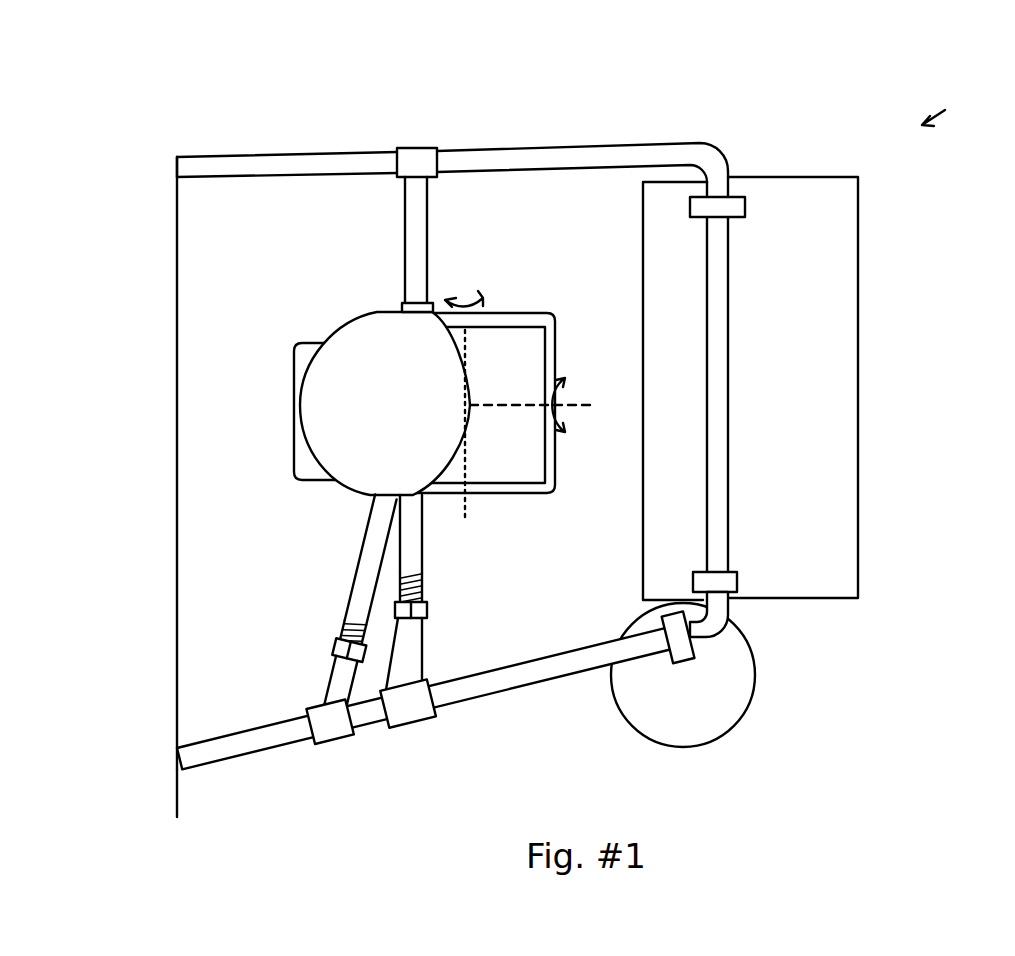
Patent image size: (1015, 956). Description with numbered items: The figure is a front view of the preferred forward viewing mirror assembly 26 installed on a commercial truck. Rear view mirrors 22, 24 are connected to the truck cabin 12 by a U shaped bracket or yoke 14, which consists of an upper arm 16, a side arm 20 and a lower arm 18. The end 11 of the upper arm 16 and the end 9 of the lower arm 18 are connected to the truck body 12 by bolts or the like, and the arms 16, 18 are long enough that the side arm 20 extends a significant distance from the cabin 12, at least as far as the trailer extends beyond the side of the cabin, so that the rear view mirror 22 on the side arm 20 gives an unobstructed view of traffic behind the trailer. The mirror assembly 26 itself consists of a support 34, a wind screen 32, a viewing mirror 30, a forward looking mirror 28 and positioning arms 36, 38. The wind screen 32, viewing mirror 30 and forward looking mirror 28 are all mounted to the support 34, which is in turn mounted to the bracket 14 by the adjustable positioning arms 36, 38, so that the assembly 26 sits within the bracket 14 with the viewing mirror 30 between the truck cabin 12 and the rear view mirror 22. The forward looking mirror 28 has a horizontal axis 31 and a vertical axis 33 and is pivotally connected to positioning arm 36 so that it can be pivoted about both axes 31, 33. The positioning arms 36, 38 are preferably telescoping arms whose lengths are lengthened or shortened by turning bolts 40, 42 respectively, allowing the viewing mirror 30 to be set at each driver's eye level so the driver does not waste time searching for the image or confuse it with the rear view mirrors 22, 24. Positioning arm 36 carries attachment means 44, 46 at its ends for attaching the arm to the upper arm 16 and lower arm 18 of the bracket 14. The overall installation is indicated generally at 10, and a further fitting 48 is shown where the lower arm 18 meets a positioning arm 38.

The support wall 9 is at (190, 755).
The fluid system apparatus 10 is at (955, 104).
The pipe end cap 11 is at (193, 158).
The frame upright 12 is at (143, 187).
The upper supply pipe 14 is at (340, 155).
The upper return pipe 16 is at (540, 160).
The lower drain pipe 18 is at (510, 682).
The vertical riser pipe 20 is at (720, 462).
The reservoir tank 22 is at (847, 260).
The pump 24 is at (740, 688).
The inlet pipe 26 is at (453, 253).
The housing shell 28 is at (537, 317).
The housing body 30 is at (298, 484).
The rotation direction of housing 31 is at (575, 402).
The ball 32 is at (314, 405).
The rotation direction of ball 33 is at (483, 298).
The seal 34 is at (400, 307).
The center outlet pipe 36 is at (417, 555).
The side outlet pipe 38 is at (355, 594).
The threaded connector 40 is at (385, 690).
The threaded connector 42 is at (317, 705).
The tee fitting 44 is at (420, 162).
The tee fitting 46 is at (413, 703).
The tee fitting 48 is at (332, 727).